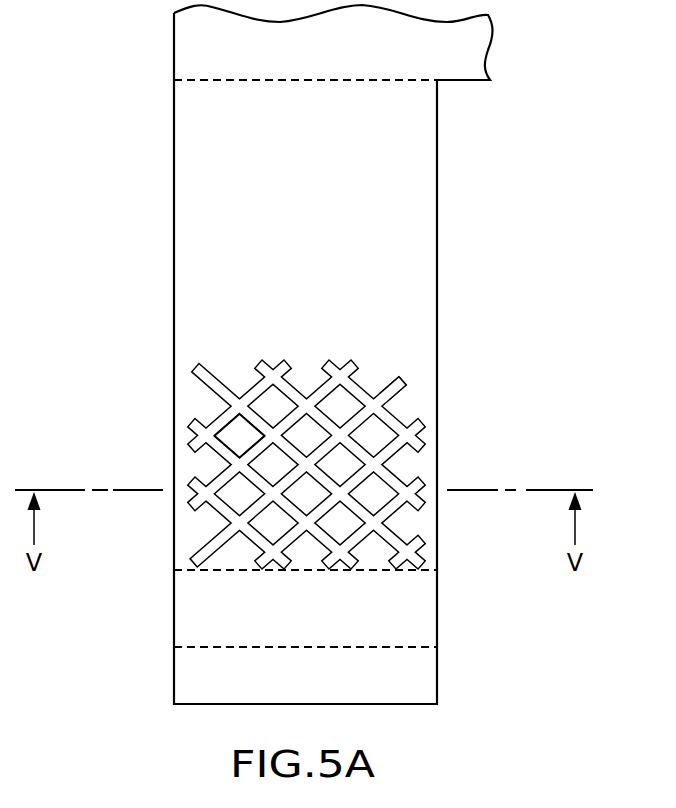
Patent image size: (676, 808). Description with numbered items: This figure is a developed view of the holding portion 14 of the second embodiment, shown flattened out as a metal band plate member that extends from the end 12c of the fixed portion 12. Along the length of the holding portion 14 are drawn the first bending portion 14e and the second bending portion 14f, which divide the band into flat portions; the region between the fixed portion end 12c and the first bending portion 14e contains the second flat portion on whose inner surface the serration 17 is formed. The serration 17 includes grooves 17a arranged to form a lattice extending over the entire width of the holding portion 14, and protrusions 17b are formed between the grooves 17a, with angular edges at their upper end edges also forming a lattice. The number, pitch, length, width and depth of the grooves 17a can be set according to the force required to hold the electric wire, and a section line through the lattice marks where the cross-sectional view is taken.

The fixed portion 12 is at (187, 48).
The end of the fixed portion 12c is at (220, 82).
The holding portion 14 is at (438, 214).
The first bending portion 14e is at (208, 571).
The second bending portion 14f is at (205, 648).
The serration 17 is at (383, 343).
The grooves 17a is at (398, 381).
The protrusions 17b is at (237, 436).